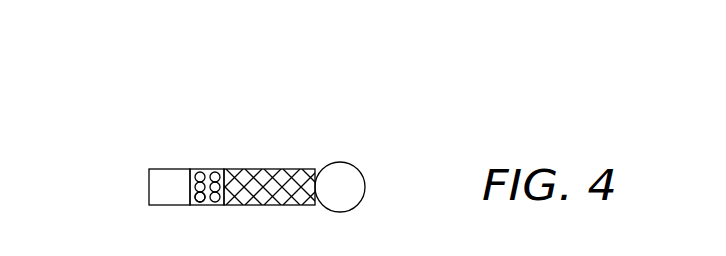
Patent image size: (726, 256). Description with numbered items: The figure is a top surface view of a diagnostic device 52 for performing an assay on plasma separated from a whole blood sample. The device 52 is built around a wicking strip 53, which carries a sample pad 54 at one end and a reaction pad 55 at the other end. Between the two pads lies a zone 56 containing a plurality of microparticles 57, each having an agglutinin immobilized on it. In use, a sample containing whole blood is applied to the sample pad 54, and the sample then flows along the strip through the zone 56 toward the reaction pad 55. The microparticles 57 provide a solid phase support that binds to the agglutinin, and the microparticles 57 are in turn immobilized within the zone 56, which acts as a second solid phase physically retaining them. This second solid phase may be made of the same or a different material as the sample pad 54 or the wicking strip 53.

The diagnostic device 52 is at (265, 165).
The wicking strip 53 is at (290, 133).
The sample pad 54 is at (150, 171).
The reaction pad 55 is at (361, 206).
The zone 56 is at (195, 159).
The microparticles 57 is at (225, 222).